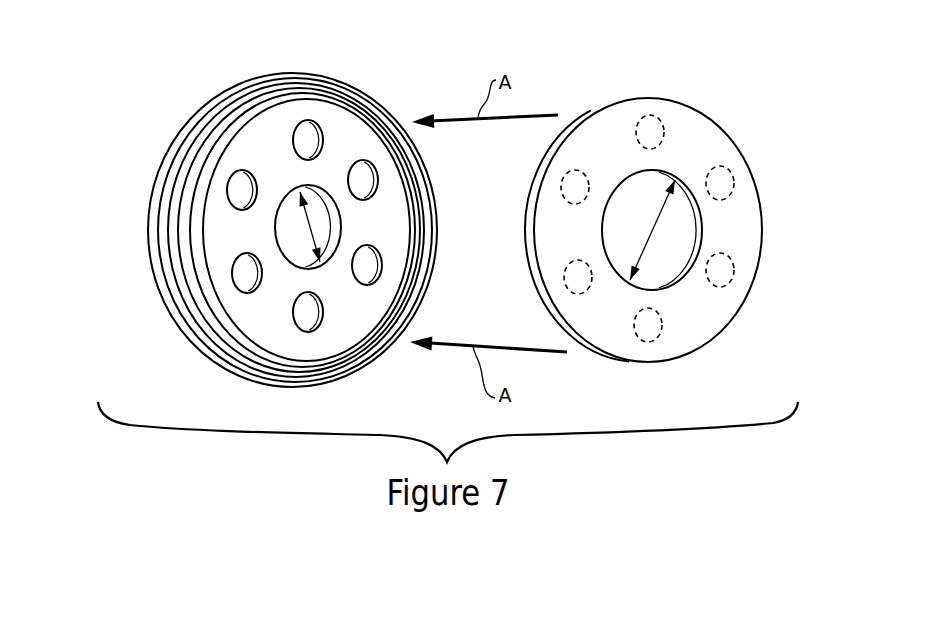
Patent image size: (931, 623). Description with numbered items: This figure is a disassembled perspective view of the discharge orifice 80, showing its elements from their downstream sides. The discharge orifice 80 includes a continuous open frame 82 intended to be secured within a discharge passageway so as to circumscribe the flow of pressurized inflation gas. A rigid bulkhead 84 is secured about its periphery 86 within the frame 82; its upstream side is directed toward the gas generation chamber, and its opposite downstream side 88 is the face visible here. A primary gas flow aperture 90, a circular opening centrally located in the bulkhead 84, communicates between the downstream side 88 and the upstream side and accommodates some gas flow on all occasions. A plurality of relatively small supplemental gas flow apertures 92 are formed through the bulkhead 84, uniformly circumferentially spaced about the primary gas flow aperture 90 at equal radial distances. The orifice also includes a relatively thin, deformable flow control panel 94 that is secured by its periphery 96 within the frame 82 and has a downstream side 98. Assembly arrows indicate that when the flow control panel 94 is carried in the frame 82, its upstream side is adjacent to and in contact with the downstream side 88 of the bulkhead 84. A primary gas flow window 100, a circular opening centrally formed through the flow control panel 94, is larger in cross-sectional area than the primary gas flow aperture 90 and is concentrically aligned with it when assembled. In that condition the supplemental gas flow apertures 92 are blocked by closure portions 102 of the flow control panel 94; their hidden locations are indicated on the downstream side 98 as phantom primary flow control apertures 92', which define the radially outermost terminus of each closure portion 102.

The discharge orifice 80 is at (697, 81).
The continuous open frame 82 is at (203, 140).
The rigid bulkhead 84 is at (223, 225).
The periphery 86 is at (214, 262).
The downstream side 88 is at (364, 319).
The primary gas flow aperture 90 is at (314, 226).
The supplemental gas flow apertures 92 is at (334, 179).
The phantom primary flow control apertures 92' is at (746, 127).
The flow control panel 94 is at (780, 181).
The periphery 96 is at (753, 214).
The downstream side 98 is at (745, 188).
The primary gas flow window 100 is at (654, 232).
The closure portions 102 is at (575, 180).